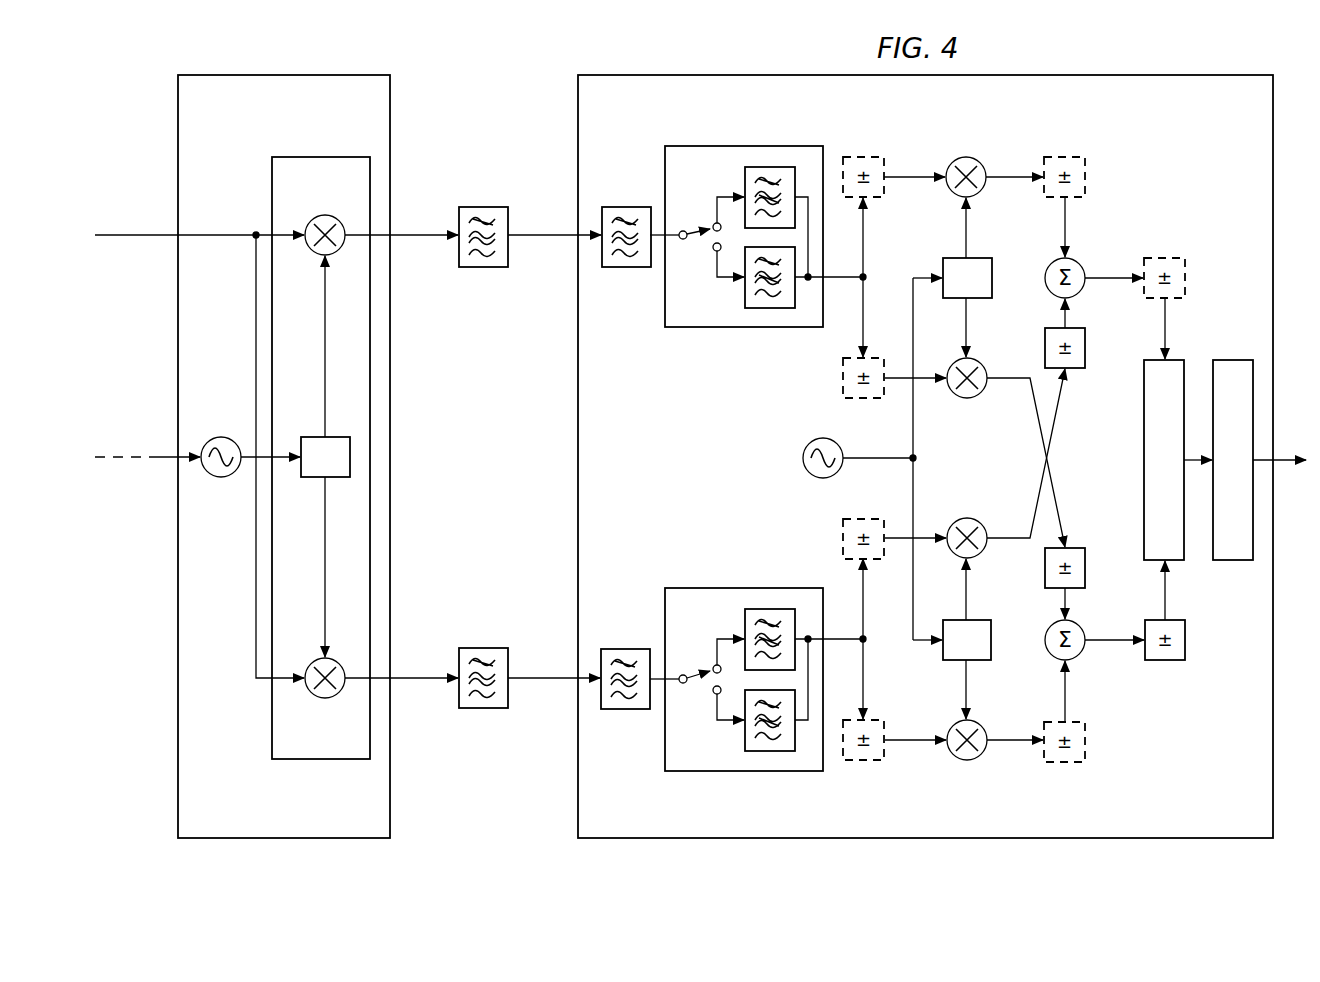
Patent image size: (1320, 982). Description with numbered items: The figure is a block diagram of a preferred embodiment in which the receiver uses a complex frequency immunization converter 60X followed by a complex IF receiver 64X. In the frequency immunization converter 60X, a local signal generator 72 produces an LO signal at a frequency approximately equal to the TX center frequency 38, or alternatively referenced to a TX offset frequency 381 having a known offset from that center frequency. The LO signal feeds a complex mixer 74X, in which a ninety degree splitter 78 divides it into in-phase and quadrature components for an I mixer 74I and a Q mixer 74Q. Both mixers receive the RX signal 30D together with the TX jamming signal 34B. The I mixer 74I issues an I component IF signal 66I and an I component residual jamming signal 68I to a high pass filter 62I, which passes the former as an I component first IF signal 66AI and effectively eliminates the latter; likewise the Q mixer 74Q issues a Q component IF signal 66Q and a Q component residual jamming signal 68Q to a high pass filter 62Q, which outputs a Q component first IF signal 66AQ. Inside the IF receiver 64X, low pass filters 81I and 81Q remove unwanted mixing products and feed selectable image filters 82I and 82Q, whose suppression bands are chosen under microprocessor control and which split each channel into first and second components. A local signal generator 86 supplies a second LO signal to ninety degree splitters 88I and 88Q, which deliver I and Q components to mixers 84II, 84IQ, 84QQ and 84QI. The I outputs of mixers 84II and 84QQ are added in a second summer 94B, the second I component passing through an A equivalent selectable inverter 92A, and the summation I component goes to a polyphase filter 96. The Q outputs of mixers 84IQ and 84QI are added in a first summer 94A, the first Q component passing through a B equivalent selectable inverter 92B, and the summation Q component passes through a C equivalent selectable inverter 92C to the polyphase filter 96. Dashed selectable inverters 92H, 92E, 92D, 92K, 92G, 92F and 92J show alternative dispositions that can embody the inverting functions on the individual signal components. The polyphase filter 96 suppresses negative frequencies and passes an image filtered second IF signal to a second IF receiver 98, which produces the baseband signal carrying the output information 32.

The frequency immunization converter 60X is at (176, 124).
The complex mixer 74X is at (270, 706).
The RX signal 30D is at (152, 233).
The TX jamming signal 34B is at (122, 238).
The I mixer 74I is at (318, 217).
The Q mixer 74Q is at (313, 699).
The TX center frequency 38 is at (158, 456).
The TX offset frequency 381 is at (110, 463).
The local signal generator 72 is at (221, 438).
The 90 degree splitter 78 is at (310, 438).
The I component IF signal 66I is at (413, 233).
The I component residual jamming signal 68I is at (412, 240).
The high pass filter 62I is at (483, 207).
The I component first IF signal 66AI is at (527, 240).
The Q component IF signal 66Q is at (413, 676).
The Q component residual jamming signal 68Q is at (412, 683).
The high pass filter 62Q is at (483, 649).
The Q component first IF signal 66AQ is at (527, 683).
The IF receiver 64X is at (576, 124).
The I low pass filter 81I is at (622, 207).
The Q low pass filter 81Q is at (625, 711).
The selectable image filter 82I is at (720, 145).
The selectable image filter 82Q is at (702, 773).
The selectable inverter 92H is at (865, 157).
The selectable inverter 92E is at (843, 380).
The selectable inverter 92D is at (843, 545).
The selectable inverter 92K is at (866, 761).
The mixer 84II is at (975, 157).
The mixer 84IQ is at (957, 397).
The mixer 84QQ is at (960, 519).
The mixer 84QI is at (972, 761).
The 90 degree splitter 88I is at (950, 258).
The 90 degree splitter 88Q is at (950, 662).
The local signal generator 86 is at (808, 446).
The selectable inverter 92G is at (1065, 157).
The second summer 94B is at (1047, 266).
The A equivalent selectable inverter 92A is at (1086, 348).
The B equivalent selectable inverter 92B is at (1086, 574).
The selectable inverter 92F is at (1165, 258).
The first summer 94A is at (1078, 657).
The selectable inverter 92J is at (1065, 762).
The C equivalent selectable inverter 92C is at (1165, 661).
The polyphase filter 96 is at (1143, 470).
The second IF receiver 98 is at (1232, 562).
The output information 32 is at (1287, 463).